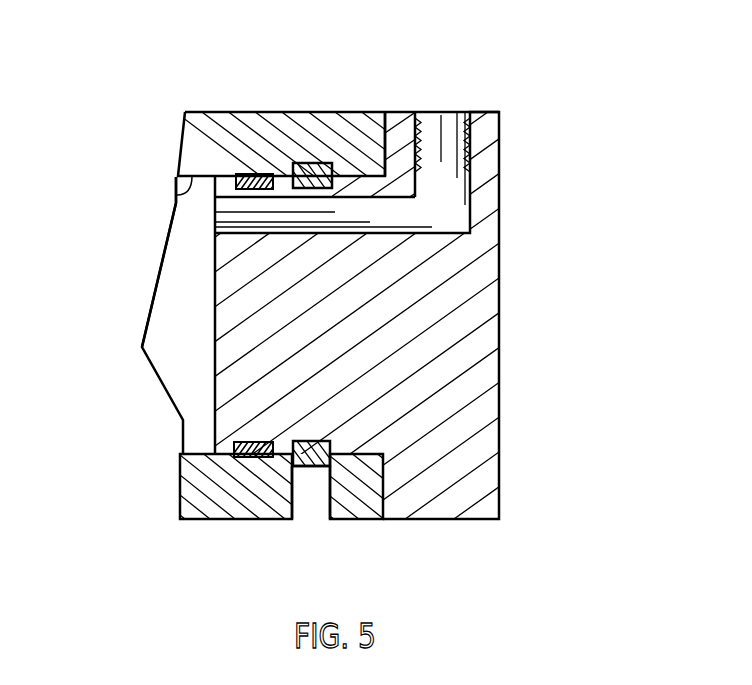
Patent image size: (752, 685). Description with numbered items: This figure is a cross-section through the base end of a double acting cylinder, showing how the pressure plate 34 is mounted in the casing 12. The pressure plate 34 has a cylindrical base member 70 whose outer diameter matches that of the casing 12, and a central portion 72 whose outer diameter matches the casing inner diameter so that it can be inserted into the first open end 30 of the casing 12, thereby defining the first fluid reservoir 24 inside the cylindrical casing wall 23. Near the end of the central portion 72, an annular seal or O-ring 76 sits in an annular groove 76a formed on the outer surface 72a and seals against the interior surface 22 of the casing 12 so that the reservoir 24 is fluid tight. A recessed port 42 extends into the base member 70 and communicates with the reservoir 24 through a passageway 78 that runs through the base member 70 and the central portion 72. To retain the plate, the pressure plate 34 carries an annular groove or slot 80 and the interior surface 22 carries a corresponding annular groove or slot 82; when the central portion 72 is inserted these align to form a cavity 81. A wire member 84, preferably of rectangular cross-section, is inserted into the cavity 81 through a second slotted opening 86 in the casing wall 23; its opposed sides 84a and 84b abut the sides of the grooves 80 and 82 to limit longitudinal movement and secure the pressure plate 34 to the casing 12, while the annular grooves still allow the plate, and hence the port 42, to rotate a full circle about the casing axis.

The casing 12 is at (217, 100).
The interior surface 22 is at (177, 195).
The cylindrical casing wall 23 is at (275, 133).
The first fluid reservoir 24 is at (180, 265).
The first open end 30 is at (410, 125).
The pressure plate 34 is at (499, 262).
The port 42 is at (449, 100).
The cylindrical base member 70 is at (485, 503).
The central portion 72 is at (233, 355).
The outer surface 72a is at (222, 178).
The annular seal or O-ring 76 is at (238, 458).
The annular groove 76a is at (215, 409).
The passageway 78 is at (428, 208).
The annular groove or slot 80 is at (328, 178).
The cavity 81 is at (311, 516).
The annular groove or slot 82 is at (330, 168).
The wire member 84 is at (281, 433).
The side of wire member 84a is at (290, 440).
The side of wire member 84b is at (333, 452).
The second slotted opening 86 is at (300, 495).